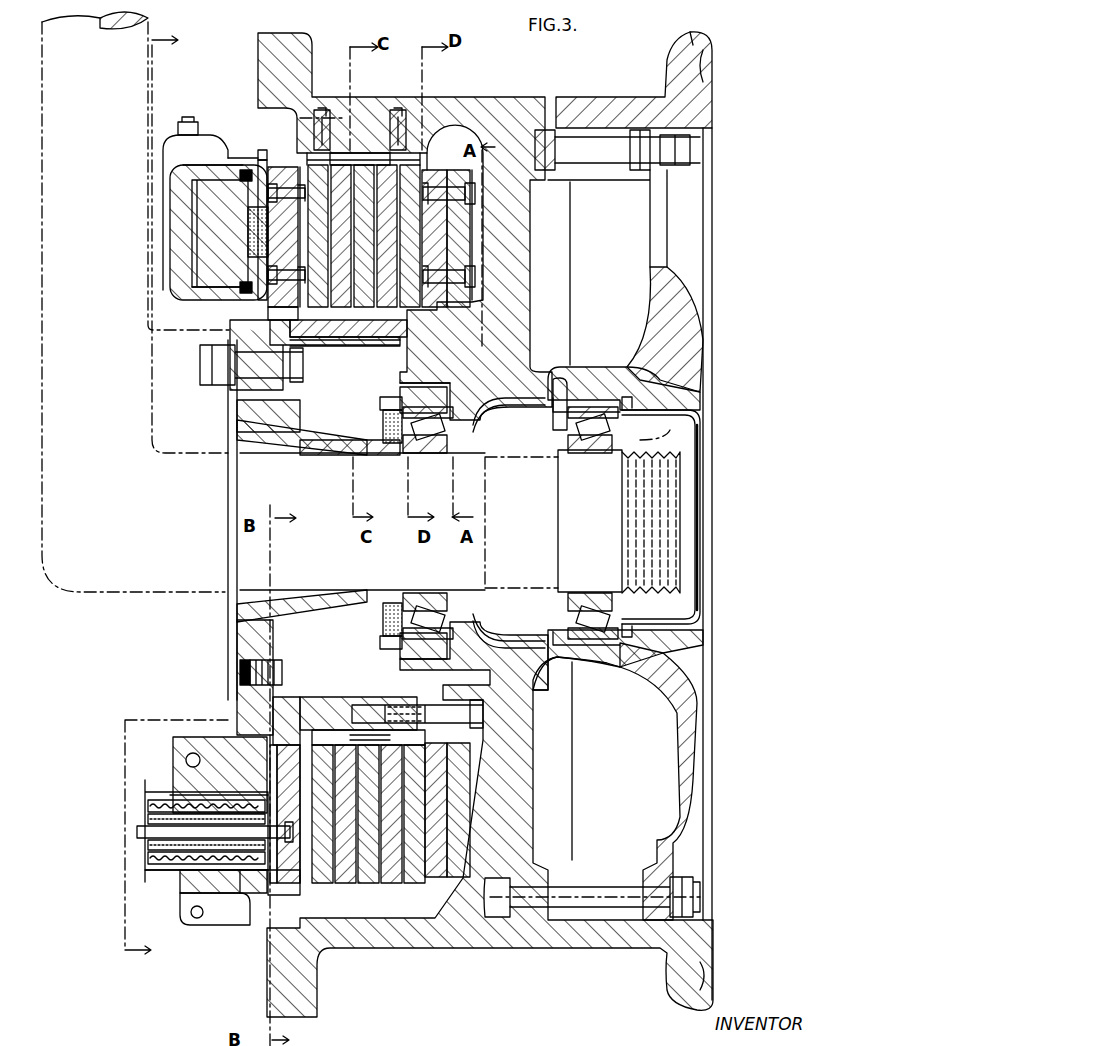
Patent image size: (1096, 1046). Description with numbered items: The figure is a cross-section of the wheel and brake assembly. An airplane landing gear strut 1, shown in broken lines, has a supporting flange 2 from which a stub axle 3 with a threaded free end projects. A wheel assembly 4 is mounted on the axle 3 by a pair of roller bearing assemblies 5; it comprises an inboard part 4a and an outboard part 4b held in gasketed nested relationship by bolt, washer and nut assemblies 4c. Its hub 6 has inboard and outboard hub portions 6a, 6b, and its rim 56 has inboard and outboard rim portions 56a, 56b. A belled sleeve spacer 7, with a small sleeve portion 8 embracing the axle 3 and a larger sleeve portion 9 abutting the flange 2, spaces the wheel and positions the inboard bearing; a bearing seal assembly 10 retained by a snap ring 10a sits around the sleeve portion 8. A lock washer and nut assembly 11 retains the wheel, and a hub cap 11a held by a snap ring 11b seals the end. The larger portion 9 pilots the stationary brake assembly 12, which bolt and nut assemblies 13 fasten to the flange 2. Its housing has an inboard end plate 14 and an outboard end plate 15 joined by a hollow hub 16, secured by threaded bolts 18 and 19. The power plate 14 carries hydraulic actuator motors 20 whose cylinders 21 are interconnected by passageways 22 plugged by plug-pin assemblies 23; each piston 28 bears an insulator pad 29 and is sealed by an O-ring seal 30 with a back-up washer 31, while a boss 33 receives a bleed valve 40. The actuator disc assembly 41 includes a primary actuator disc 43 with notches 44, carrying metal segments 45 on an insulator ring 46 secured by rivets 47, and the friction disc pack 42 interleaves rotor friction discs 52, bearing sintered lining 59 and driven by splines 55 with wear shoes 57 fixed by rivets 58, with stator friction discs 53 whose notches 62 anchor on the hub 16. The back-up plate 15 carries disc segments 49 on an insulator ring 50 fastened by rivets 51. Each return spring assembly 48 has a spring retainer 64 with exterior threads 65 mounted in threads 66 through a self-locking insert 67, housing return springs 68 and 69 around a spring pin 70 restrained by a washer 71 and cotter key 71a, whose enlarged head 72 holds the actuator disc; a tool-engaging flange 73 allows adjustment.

The landing gear strut 1 is at (136, 489).
The supporting flange 2 is at (228, 404).
The stub shaft or axle 3 is at (460, 521).
The wheel assembly 4 is at (703, 82).
The inboard part 4a is at (525, 313).
The outboard part 4b is at (690, 330).
The bolt, washer and nut assemblies 4c is at (692, 867).
The roller bearing assemblies 5 is at (430, 454).
The hub 6 is at (615, 356).
The inboard hub portion 6a is at (415, 397).
The outboard hub portion 6b is at (610, 385).
The sleeve spacer 7 is at (328, 422).
The small diameter sleeve portion 8 is at (371, 456).
The large diameter sleeve portion 9 is at (240, 432).
The bearing seal assembly 10 is at (383, 426).
The snap ring 10a is at (380, 410).
The lock washer and threaded nut assembly 11 is at (668, 440).
The hub cap 11a is at (698, 483).
The snap ring 11b is at (632, 403).
The brake assembly 12 is at (228, 155).
The bolt and nut assemblies 13 is at (193, 369).
The inboard end plate 14 is at (250, 326).
The outboard end plate 15 is at (455, 235).
The hub 16 is at (280, 705).
The threaded bolts 18 is at (286, 696).
The threaded bolts 19 is at (428, 712).
The hydraulic actuator motors 20 is at (164, 275).
The cylinder 21 is at (215, 170).
The passageways 22 is at (190, 181).
The plug-pin assemblies 23 is at (197, 918).
The piston 28 is at (210, 235).
The insulator pad 29 is at (253, 218).
The O-ring seal 30 is at (262, 288).
The back-up washer 31 is at (258, 150).
The boss 33 is at (167, 162).
The bleed valve 40 is at (184, 124).
The actuator disc assembly 41 is at (270, 295).
The friction disc pack 42 is at (420, 905).
The primary actuator disc 43 is at (277, 760).
The notches 44 is at (283, 740).
The metal segments 45 is at (290, 168).
The insulator ring 46 is at (270, 192).
The rivets 47 is at (270, 200).
The return spring assembly 48 is at (145, 846).
The disc segments 49 is at (436, 165).
The insulator ring 50 is at (452, 170).
The rivets 51 is at (455, 278).
The rotor friction disc 52 is at (317, 310).
The stator friction disc 53 is at (343, 310).
The driving splines 55 is at (352, 150).
The wheel or tire rim 56 is at (458, 98).
The inboard rim portion 56a is at (376, 108).
The outboard rim portion 56b is at (590, 100).
The key plate or wear shoe 57 is at (435, 125).
The screws or rivets 58 is at (323, 108).
The sintered metallic lining 59 is at (334, 745).
The notches 62 is at (362, 745).
The spring retainer or thimble 64 is at (176, 800).
The exterior threads 65 is at (180, 795).
The threads 66 is at (252, 870).
The self-locking coiled screw thread insert 67 is at (215, 878).
The return spring 68 is at (185, 866).
The return spring 69 is at (145, 860).
The spring pin 70 is at (150, 833).
The washer 71 is at (145, 806).
The cotter key 71a is at (145, 820).
The enlarged head 72 is at (263, 835).
The tool-engaging flange 73 is at (148, 875).